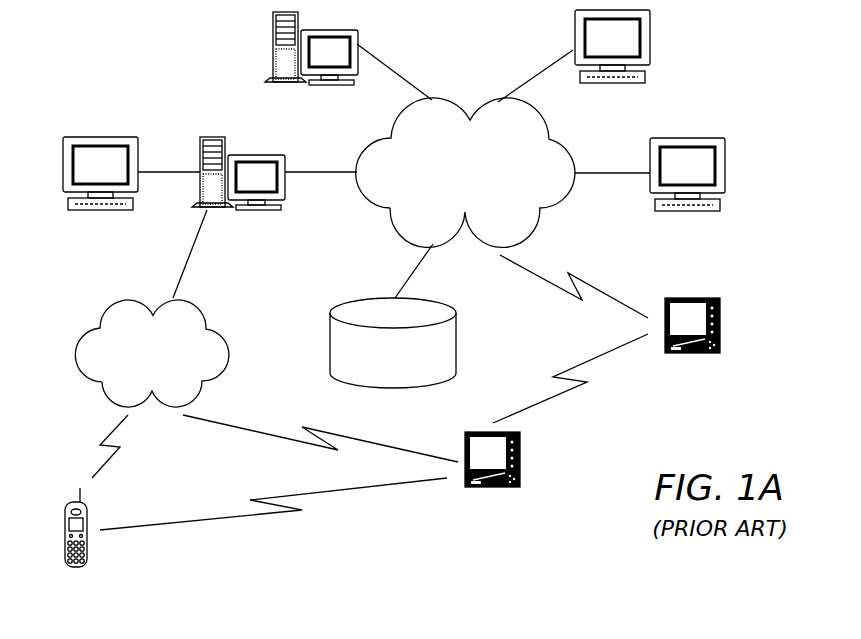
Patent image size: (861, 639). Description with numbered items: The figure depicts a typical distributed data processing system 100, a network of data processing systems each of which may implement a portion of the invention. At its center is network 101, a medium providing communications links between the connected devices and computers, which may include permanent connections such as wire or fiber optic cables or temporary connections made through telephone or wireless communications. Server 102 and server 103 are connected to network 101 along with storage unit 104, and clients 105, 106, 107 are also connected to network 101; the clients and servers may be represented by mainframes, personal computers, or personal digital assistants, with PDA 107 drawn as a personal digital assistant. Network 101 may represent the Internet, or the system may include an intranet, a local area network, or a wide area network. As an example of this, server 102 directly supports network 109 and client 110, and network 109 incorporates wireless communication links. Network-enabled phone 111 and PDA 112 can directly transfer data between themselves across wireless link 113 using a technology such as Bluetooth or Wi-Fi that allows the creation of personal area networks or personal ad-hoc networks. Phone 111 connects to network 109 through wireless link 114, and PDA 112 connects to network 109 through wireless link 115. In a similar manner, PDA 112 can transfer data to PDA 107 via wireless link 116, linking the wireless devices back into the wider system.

The distributed data processing system 100 is at (131, 62).
The network 101 is at (452, 193).
The server 102 is at (210, 137).
The server 103 is at (273, 52).
The storage unit 104 is at (330, 350).
The client 105 is at (650, 45).
The client 106 is at (722, 172).
The PDA 107 is at (722, 322).
The network 109 is at (138, 373).
The client 110 is at (100, 137).
The network-enabled phone 111 is at (88, 547).
The PDA 112 is at (522, 462).
The wireless link 113 is at (210, 519).
The wireless link 114 is at (110, 465).
The wireless link 115 is at (237, 424).
The wireless link 116 is at (547, 396).